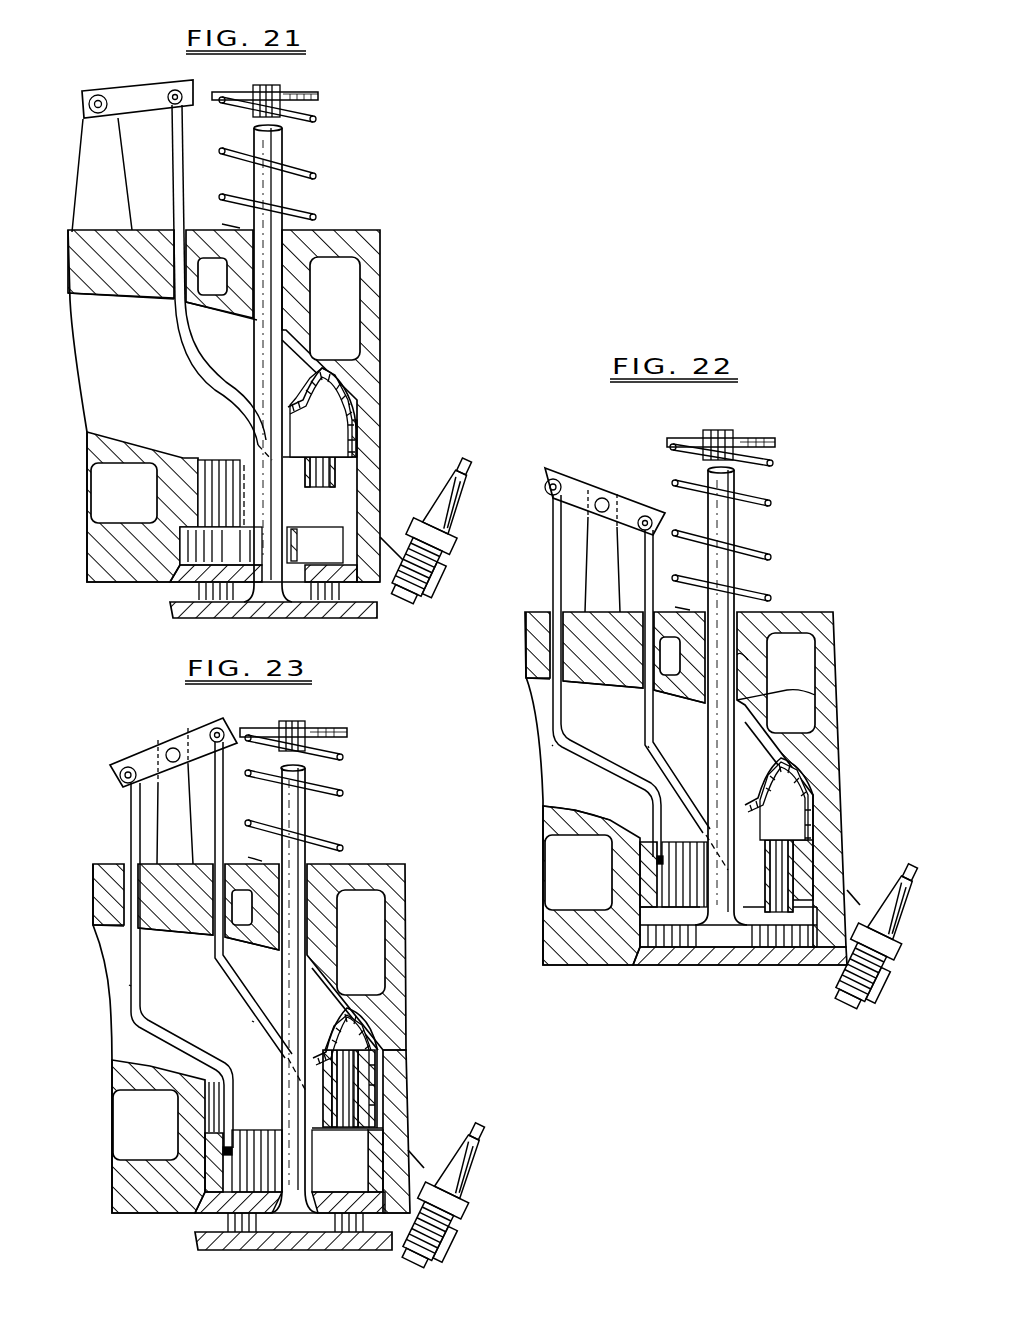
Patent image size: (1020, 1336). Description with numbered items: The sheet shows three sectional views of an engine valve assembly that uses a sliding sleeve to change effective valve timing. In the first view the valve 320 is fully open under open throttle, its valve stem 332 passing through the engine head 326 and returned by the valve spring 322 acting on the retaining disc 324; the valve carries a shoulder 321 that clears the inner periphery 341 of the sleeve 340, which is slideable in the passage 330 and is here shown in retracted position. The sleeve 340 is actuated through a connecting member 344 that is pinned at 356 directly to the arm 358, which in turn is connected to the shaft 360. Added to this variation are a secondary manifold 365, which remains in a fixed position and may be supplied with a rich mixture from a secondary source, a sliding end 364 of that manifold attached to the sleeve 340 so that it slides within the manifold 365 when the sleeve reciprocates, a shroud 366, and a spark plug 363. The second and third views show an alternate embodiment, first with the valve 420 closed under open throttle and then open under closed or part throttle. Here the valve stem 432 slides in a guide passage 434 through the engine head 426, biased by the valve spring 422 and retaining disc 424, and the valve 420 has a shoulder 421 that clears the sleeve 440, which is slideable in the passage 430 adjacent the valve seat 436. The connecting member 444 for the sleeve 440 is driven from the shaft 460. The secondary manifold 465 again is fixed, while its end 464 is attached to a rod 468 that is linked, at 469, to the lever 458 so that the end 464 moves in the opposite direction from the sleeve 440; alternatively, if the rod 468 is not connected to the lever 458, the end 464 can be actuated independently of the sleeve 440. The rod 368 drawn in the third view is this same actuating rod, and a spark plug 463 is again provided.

In FIG. 21, the valve 320 is at (186, 614).
In FIG. 21, the shoulder 321 is at (196, 591).
In FIG. 21, the valve spring 322 is at (316, 177).
In FIG. 21, the retaining disc 324 is at (305, 96).
In FIG. 21, the engine head 326 is at (383, 289).
In FIG. 21, the passage 330 is at (162, 329).
In FIG. 21, the valve stem 332 is at (258, 353).
In FIG. 21, the sleeve 340 is at (186, 458).
In FIG. 21, the inner periphery 341 is at (220, 482).
In FIG. 21, the connecting member 344 is at (203, 389).
In FIG. 21, the pin 356 is at (181, 93).
In FIG. 21, the arm 358 is at (139, 91).
In FIG. 21, the shaft 360 is at (89, 107).
In FIG. 21, the spark plug 363 is at (442, 521).
In FIG. 21, the sliding end of secondary manifold 364 is at (328, 448).
In FIG. 21, the secondary manifold 365 is at (322, 404).
In FIG. 23, the secondary manifold 365 is at (347, 1036).
In FIG. 21, the shroud 366 is at (308, 555).
In FIG. 23, the rod 368 is at (252, 1021).
In FIG. 22, the valve 420 is at (727, 950).
In FIG. 23, the valve 420 is at (280, 1250).
In FIG. 22, the shoulder 421 is at (708, 930).
In FIG. 23, the shoulder 421 is at (220, 1224).
In FIG. 22, the valve spring 422 is at (772, 466).
In FIG. 23, the valve spring 422 is at (346, 790).
In FIG. 22, the retaining disc 424 is at (768, 438).
In FIG. 23, the retaining disc 424 is at (340, 718).
In FIG. 22, the engine head 426 is at (840, 769).
In FIG. 23, the engine head 426 is at (408, 945).
In FIG. 22, the passage 430 is at (705, 741).
In FIG. 23, the passage 430 is at (210, 992).
In FIG. 22, the valve stem 432 is at (725, 535).
In FIG. 23, the valve stem 432 is at (294, 989).
In FIG. 22, the guide passage 434 is at (736, 664).
In FIG. 22, the valve seat 436 is at (637, 966).
In FIG. 23, the valve seat 436 is at (195, 1214).
In FIG. 22, the sleeve 440 is at (553, 806).
In FIG. 22, the connecting member 444 is at (552, 745).
In FIG. 23, the connecting member 444 is at (129, 985).
In FIG. 22, the lever 458 is at (590, 494).
In FIG. 23, the lever 458 is at (142, 752).
In FIG. 22, the shaft 460 is at (556, 480).
In FIG. 23, the shaft 460 is at (125, 768).
In FIG. 22, the spark plug 463 is at (890, 891).
In FIG. 23, the spark plug 463 is at (470, 1162).
In FIG. 22, the secondary manifold end 464 is at (779, 912).
In FIG. 23, the secondary manifold end 464 is at (350, 1105).
In FIG. 22, the secondary manifold 465 is at (787, 803).
In FIG. 22, the rod 468 is at (650, 746).
In FIG. 22, the link pin 469 is at (649, 516).
In FIG. 23, the link pin 469 is at (214, 728).